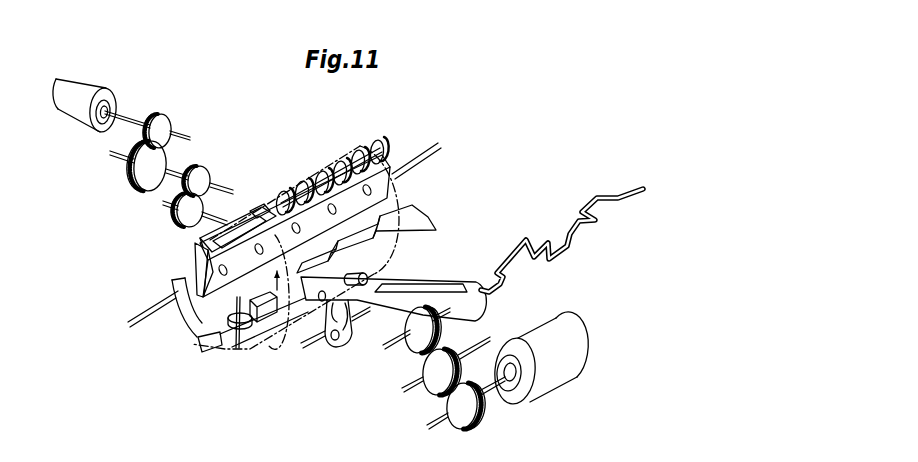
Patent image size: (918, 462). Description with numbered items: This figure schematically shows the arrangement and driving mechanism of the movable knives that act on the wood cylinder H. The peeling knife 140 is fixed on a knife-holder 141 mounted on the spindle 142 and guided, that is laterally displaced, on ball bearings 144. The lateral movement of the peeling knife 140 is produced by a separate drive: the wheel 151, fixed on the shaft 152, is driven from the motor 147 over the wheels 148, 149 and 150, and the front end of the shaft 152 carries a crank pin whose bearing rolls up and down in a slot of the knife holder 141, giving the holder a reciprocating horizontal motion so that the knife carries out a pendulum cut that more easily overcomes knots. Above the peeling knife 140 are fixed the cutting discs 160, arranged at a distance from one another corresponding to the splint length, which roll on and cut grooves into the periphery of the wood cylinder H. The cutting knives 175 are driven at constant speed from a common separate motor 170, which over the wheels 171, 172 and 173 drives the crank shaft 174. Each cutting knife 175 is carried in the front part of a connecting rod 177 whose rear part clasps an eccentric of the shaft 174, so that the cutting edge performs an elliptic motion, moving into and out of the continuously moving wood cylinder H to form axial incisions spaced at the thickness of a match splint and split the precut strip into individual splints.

The peeling knife 140 is at (195, 280).
The knife-holder 141 is at (178, 318).
The spindle 142 is at (136, 308).
The ball bearings 144 is at (232, 342).
The motor 147 is at (77, 133).
The wheel 148 is at (172, 123).
The wheel 149 is at (132, 176).
The wheel 150 is at (212, 172).
The wheel 151 is at (173, 223).
The shaft 152 is at (221, 212).
The cutting discs 160 is at (322, 173).
The motor 170 is at (578, 327).
The wheel 171 is at (475, 428).
The wheel 172 is at (425, 393).
The wheel 173 is at (407, 352).
The crank shaft 174 is at (513, 240).
The cutting knife 175 is at (430, 215).
The connecting rod 177 is at (437, 279).
The wood cylinder H is at (262, 350).